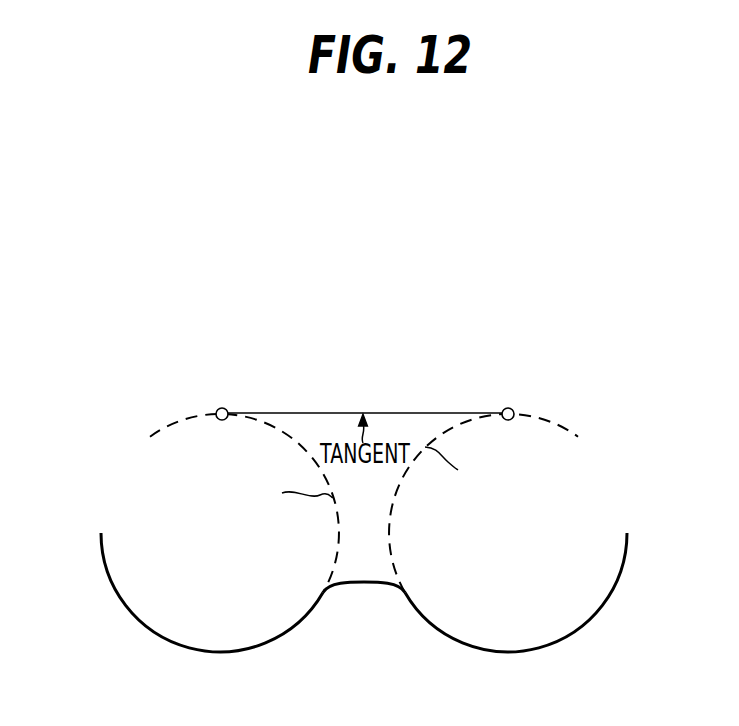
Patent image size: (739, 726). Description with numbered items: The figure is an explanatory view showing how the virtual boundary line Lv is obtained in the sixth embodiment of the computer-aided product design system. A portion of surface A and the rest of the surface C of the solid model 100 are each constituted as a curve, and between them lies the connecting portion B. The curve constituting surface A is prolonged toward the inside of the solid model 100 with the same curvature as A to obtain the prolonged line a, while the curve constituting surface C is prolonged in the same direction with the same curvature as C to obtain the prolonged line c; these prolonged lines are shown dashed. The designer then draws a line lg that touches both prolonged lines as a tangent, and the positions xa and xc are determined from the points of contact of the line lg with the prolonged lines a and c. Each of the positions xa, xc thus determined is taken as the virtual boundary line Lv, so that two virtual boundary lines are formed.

The solid model 100 is at (364, 546).
The portion of surface A is at (118, 593).
The surface B (connecting portion) B is at (364, 584).
The rest of the surface C is at (631, 563).
The position xa is at (222, 408).
The position xc is at (508, 408).
The line lg is at (492, 402).
The virtual boundary line Lv is at (365, 330).